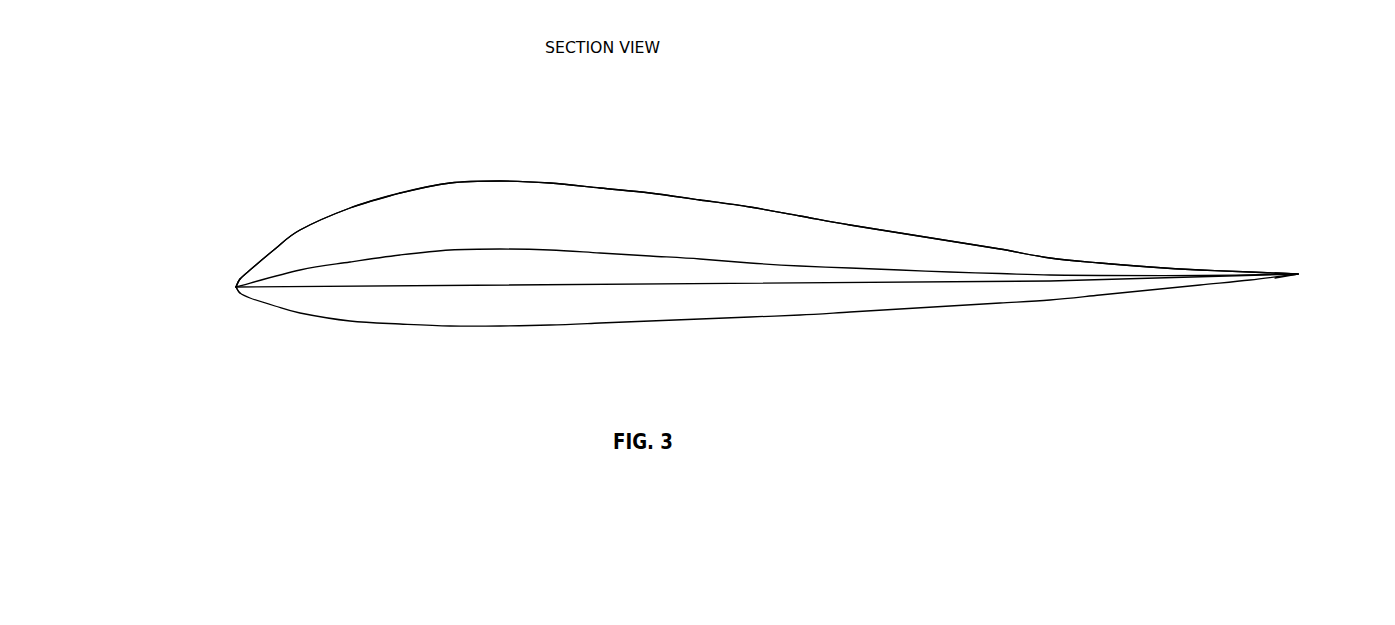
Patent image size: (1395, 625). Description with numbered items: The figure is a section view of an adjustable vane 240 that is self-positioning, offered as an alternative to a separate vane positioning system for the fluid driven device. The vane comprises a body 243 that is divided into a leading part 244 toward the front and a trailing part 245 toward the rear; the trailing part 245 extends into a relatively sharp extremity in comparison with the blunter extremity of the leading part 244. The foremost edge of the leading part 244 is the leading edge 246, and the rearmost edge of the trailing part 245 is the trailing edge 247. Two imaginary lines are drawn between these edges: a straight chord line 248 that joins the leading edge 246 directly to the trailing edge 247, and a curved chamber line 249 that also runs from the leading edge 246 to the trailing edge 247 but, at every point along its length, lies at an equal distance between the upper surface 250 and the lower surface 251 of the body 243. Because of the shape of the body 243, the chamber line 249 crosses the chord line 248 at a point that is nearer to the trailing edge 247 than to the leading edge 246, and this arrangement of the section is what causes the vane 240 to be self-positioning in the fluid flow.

The adjustable vane 240 is at (160, 122).
The body 243 is at (538, 218).
The leading part 244 is at (328, 237).
The trailing part 245 is at (848, 243).
The leading edge 246 is at (236, 289).
The trailing edge 247 is at (1298, 274).
The chord line 248 is at (350, 287).
The chamber line 249 is at (690, 258).
The upper surface 250 is at (389, 188).
The lower surface 251 is at (815, 314).